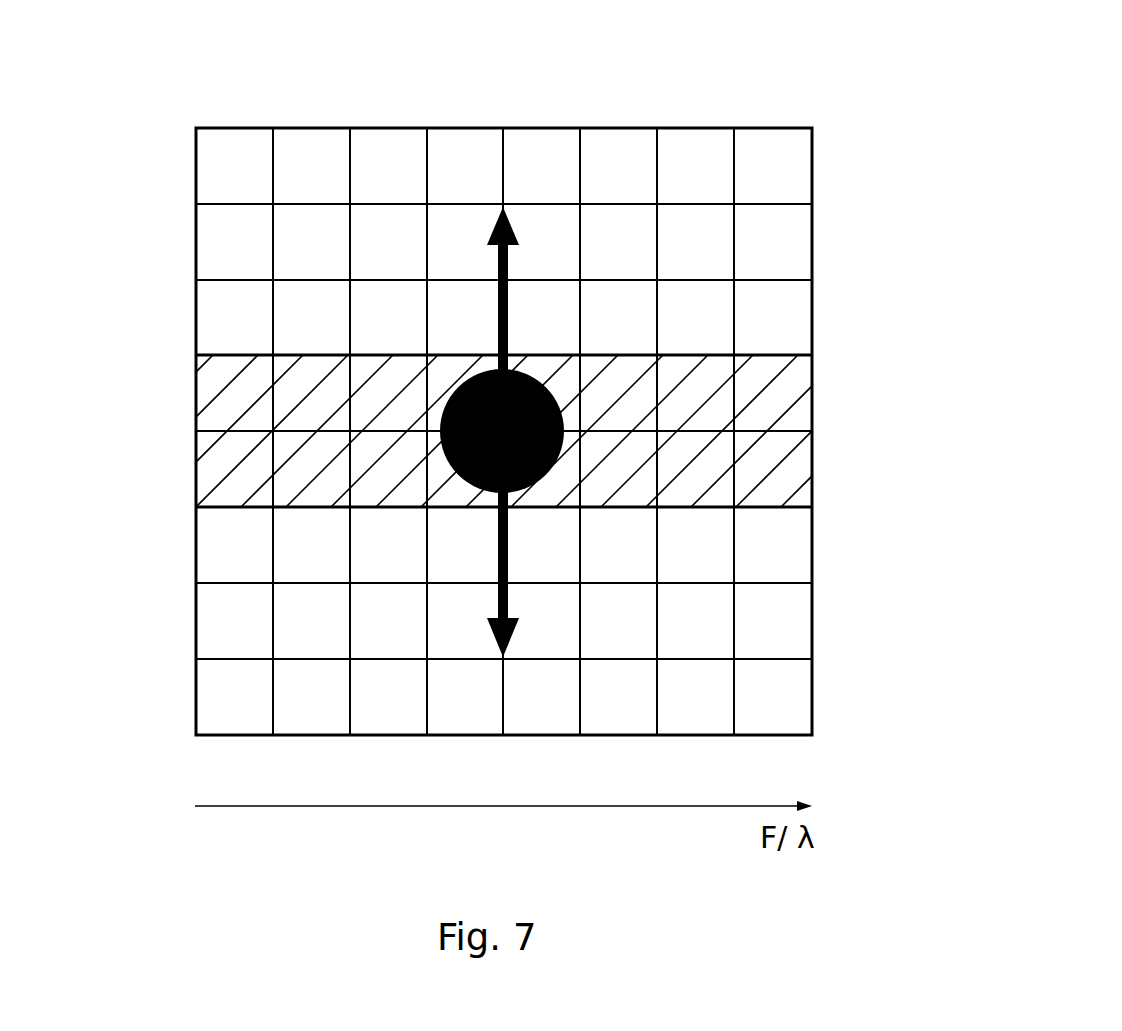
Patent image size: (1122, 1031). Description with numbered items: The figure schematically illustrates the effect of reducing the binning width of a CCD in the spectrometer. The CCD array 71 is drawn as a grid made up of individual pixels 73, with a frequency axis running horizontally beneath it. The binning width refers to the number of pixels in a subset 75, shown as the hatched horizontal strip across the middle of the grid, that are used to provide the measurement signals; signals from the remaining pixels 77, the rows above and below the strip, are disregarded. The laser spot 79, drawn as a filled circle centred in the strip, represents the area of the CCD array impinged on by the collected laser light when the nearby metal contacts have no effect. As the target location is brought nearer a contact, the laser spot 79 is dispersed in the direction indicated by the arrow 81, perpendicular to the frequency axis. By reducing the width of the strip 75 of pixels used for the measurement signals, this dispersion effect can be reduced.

The CCD array 71 is at (840, 66).
The pixels 73 is at (785, 240).
The subset of pixels 75 is at (822, 355).
The remaining pixels 77 is at (185, 352).
The laser spot 79 is at (555, 463).
The arrow 81 is at (507, 258).